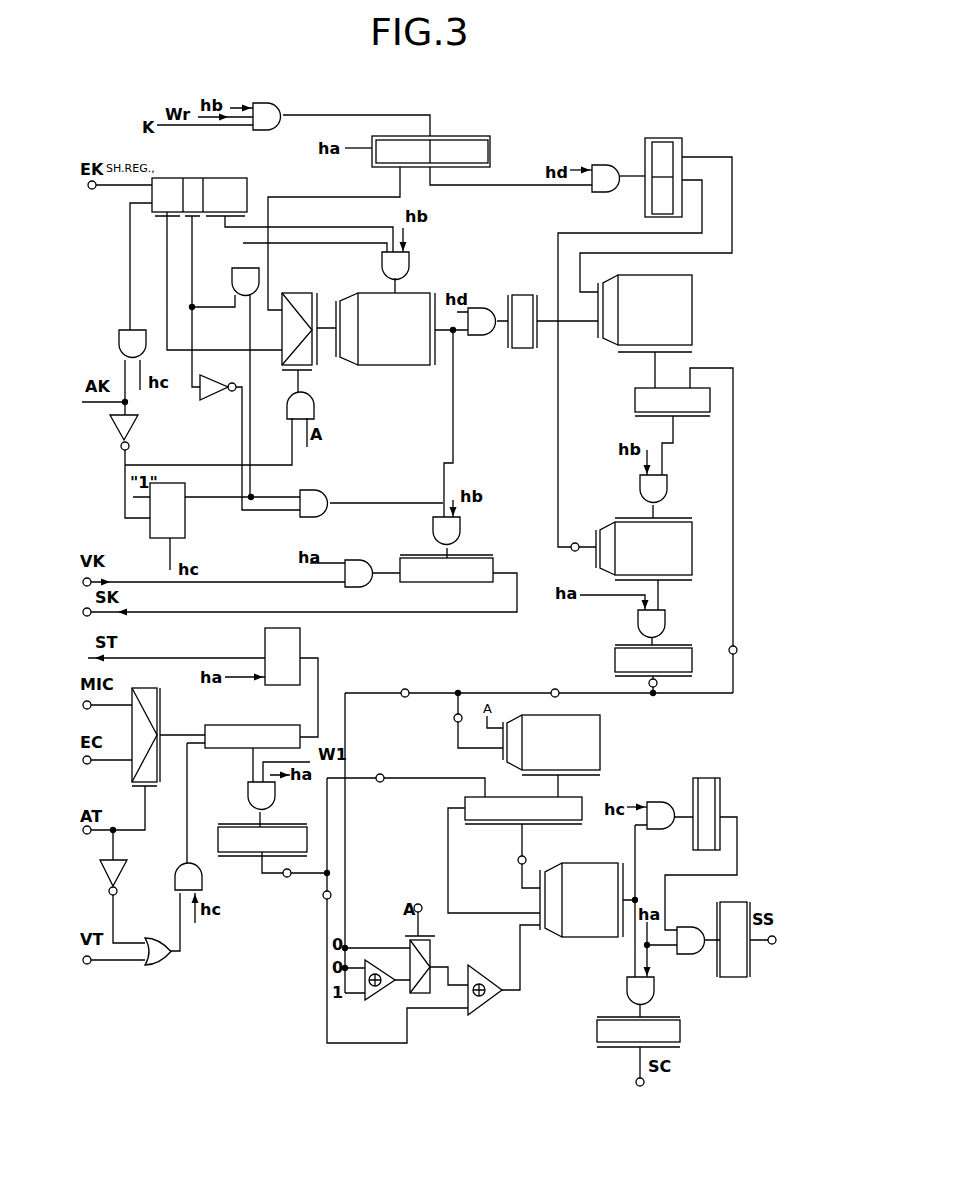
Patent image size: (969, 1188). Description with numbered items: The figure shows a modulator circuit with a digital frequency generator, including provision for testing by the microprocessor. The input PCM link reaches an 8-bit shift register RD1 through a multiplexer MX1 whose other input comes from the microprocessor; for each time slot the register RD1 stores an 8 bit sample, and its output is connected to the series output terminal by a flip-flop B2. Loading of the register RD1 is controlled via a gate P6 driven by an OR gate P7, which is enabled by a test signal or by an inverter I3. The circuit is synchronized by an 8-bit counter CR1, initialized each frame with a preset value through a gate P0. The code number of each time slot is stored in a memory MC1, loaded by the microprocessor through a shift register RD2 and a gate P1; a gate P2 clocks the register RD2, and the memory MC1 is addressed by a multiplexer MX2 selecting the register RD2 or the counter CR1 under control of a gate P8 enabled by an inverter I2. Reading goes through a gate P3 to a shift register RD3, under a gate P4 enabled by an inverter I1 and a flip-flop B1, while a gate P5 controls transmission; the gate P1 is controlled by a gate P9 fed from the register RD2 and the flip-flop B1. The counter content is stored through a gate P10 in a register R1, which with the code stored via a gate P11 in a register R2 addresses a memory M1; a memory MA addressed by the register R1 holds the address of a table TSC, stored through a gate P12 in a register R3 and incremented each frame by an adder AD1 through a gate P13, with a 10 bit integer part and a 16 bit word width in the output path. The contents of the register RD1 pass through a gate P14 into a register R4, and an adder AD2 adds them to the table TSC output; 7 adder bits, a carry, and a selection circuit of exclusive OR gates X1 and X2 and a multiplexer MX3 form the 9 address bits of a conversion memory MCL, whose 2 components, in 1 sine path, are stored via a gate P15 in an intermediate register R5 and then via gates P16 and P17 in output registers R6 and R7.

The gate P0 is at (265, 103).
The 8-bit counter CR1 is at (451, 136).
The gate P10 is at (606, 165).
The register R1 is at (662, 138).
The shift register RD2 is at (188, 178).
The gate P9 is at (236, 278).
The multiplexer MX2 is at (310, 293).
The gate P1 is at (407, 270).
The memory MC1 is at (405, 305).
The register R2 is at (522, 295).
The gate P11 is at (484, 332).
The memory M1 is at (678, 320).
The adder AD1 is at (635, 398).
The gate P13 is at (665, 490).
The memory MA is at (705, 540).
The gate P12 is at (663, 622).
The register R3 is at (615, 656).
The 16-bit bus 16 is at (704, 668).
The integer part bits 10 is at (557, 683).
The 2-bit bus 2 is at (405, 683).
The addressing bits 9 is at (451, 720).
The adder output bits 7 is at (450, 812).
The shift register bits 8 is at (430, 711).
The 1-bit line 1 is at (322, 896).
The table TSC is at (600, 740).
The adder AD2 is at (522, 826).
The conversion memory MCL is at (573, 878).
The gate P15 is at (662, 802).
The intermediate register R5 is at (708, 778).
The gate P16 is at (690, 927).
The output register R6 is at (735, 977).
The gate P17 is at (630, 992).
The output register R7 is at (597, 1032).
The gate P2 is at (120, 323).
The inverter I2 is at (120, 446).
The inverter I1 is at (212, 398).
The gate P8 is at (312, 408).
The flip-flop B1 is at (185, 526).
The gate P4 is at (315, 497).
The gate P3 is at (460, 537).
The gate P5 is at (370, 552).
The shift register RD3 is at (505, 570).
The flip-flop B2 is at (300, 648).
The multiplexer MX1 is at (155, 720).
The 8-bit shift register RD1 is at (243, 725).
The gate P14 is at (255, 792).
The register R4 is at (245, 832).
The gate P6 is at (183, 875).
The inverter I3 is at (120, 878).
The OR gate P7 is at (158, 965).
The exclusive OR gate X1 is at (383, 990).
The multiplexer MX3 is at (432, 940).
The exclusive OR gate X2 is at (490, 1008).